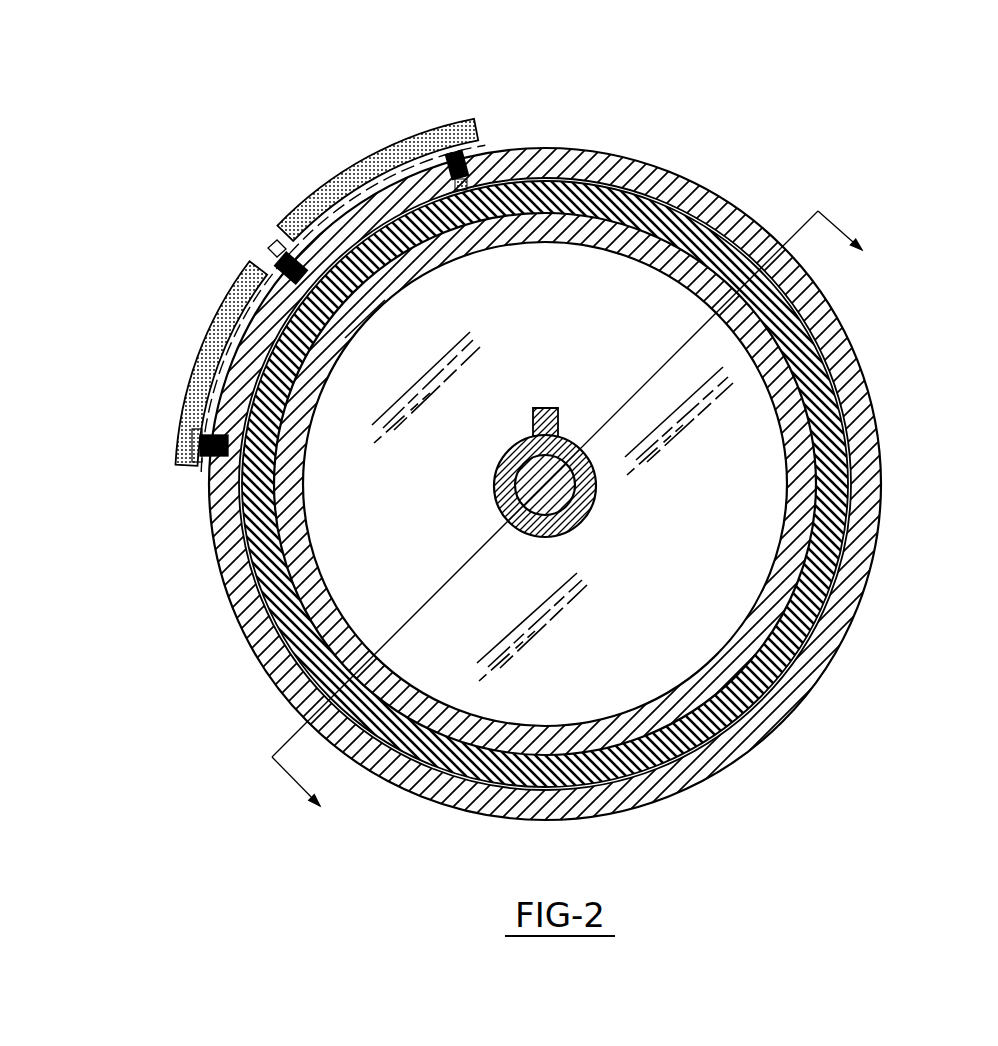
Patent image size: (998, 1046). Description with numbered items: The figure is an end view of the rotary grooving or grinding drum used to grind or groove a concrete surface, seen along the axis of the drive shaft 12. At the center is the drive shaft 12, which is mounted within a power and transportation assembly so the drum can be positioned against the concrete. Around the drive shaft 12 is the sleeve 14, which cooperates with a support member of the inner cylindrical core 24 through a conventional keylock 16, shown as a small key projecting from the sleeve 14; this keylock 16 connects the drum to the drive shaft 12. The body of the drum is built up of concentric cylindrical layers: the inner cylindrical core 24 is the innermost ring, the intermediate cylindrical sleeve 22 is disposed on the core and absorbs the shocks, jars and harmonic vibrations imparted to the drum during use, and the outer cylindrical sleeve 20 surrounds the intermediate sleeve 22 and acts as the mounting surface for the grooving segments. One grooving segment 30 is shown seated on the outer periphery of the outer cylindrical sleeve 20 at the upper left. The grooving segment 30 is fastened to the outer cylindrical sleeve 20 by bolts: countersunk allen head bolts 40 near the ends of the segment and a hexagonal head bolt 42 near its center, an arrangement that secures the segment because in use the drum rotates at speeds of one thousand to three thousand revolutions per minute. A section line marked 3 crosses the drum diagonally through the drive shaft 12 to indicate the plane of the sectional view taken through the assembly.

The drive shaft 12 is at (580, 504).
The sleeve 14 is at (498, 487).
The keylock 16 is at (533, 409).
The outer cylindrical sleeve 20 is at (870, 512).
The intermediate cylindrical sleeve 22 is at (855, 447).
The inner cylindrical core 24 is at (787, 425).
The grooving segment 30 is at (382, 80).
The countersunk allen head bolt 40 is at (483, 133).
The hexagonal head bolt 42 is at (284, 256).
The section line 3- 3 is at (581, 524).